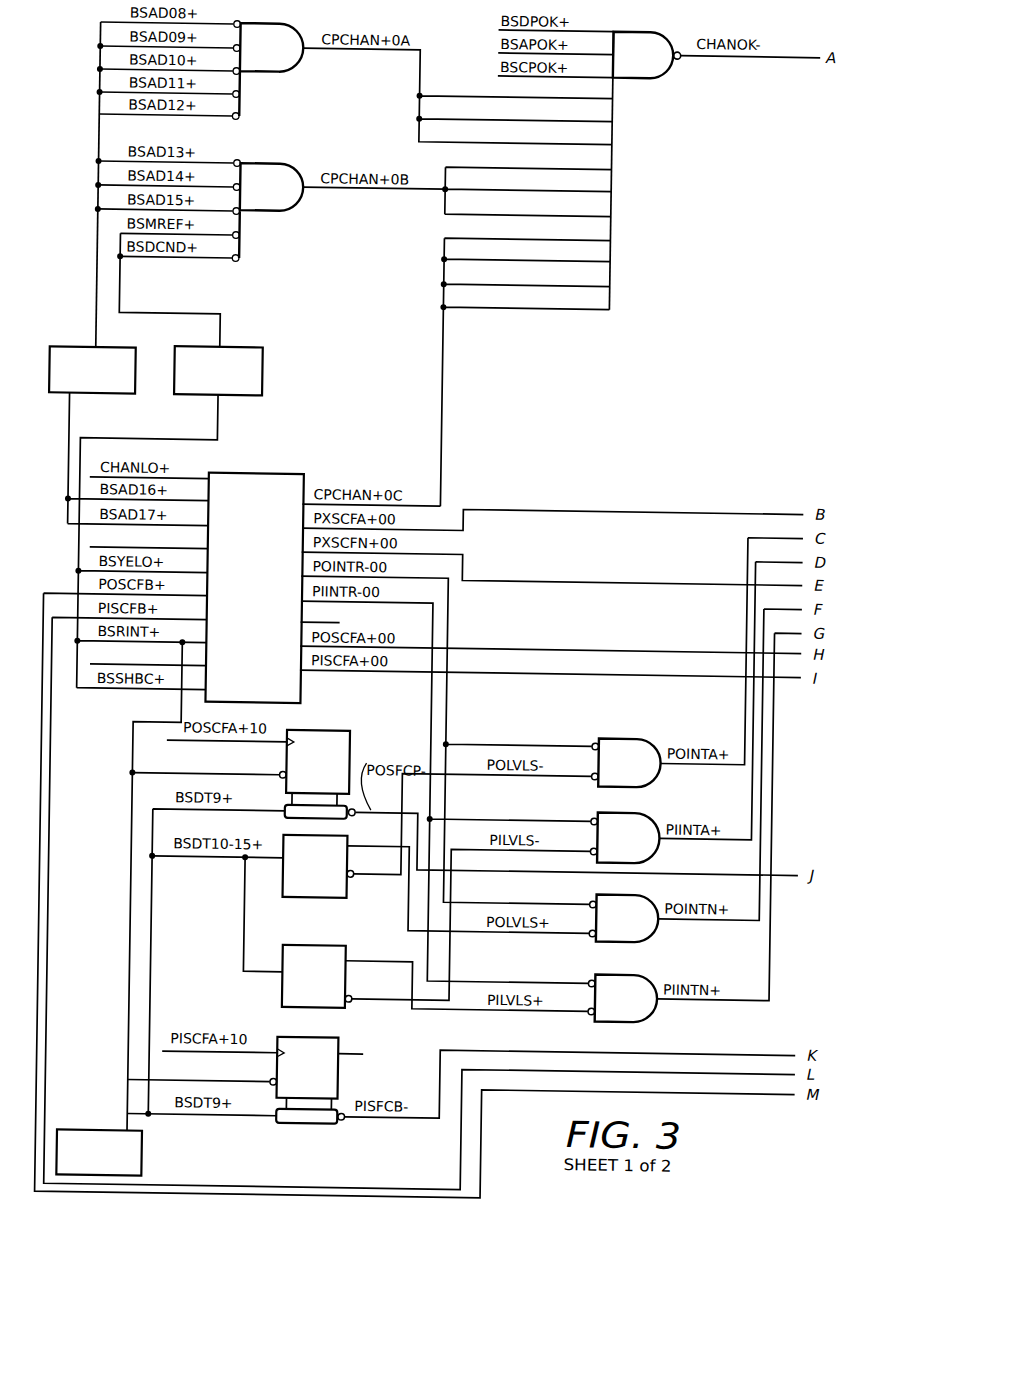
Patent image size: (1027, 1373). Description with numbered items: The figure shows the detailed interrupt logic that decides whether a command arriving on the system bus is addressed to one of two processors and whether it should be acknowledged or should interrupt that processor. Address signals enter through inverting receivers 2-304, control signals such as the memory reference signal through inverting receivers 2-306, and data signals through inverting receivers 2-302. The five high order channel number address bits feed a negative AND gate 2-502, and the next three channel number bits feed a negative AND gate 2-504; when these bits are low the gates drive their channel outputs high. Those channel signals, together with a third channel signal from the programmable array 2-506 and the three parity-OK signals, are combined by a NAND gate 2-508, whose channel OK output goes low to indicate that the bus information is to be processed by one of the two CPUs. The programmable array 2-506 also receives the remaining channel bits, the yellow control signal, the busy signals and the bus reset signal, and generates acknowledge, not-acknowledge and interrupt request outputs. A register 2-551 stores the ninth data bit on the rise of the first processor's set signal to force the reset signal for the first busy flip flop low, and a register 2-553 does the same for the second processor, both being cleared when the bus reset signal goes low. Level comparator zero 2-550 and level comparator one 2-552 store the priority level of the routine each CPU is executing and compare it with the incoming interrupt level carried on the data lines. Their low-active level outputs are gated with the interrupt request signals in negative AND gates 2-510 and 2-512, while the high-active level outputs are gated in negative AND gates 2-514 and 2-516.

The negative AND gate 2-502 is at (291, 27).
The negative AND gate 2-504 is at (283, 167).
The NAND gate 2-508 is at (647, 29).
The inverting receivers 2-304 is at (102, 352).
The inverting receivers 2-306 is at (240, 350).
The programmable array 2-506 is at (283, 476).
The register 2-551 is at (345, 732).
The level comparator 0 2-550 is at (319, 899).
The level comparator 1 2-552 is at (312, 947).
The register 2-553 is at (338, 1039).
The inverting receivers 2-302 is at (150, 1153).
The negative AND gate 2-510 is at (645, 736).
The negative AND gate 2-512 is at (647, 810).
The negative AND gate 2-514 is at (648, 938).
The negative AND gate 2-516 is at (648, 1018).